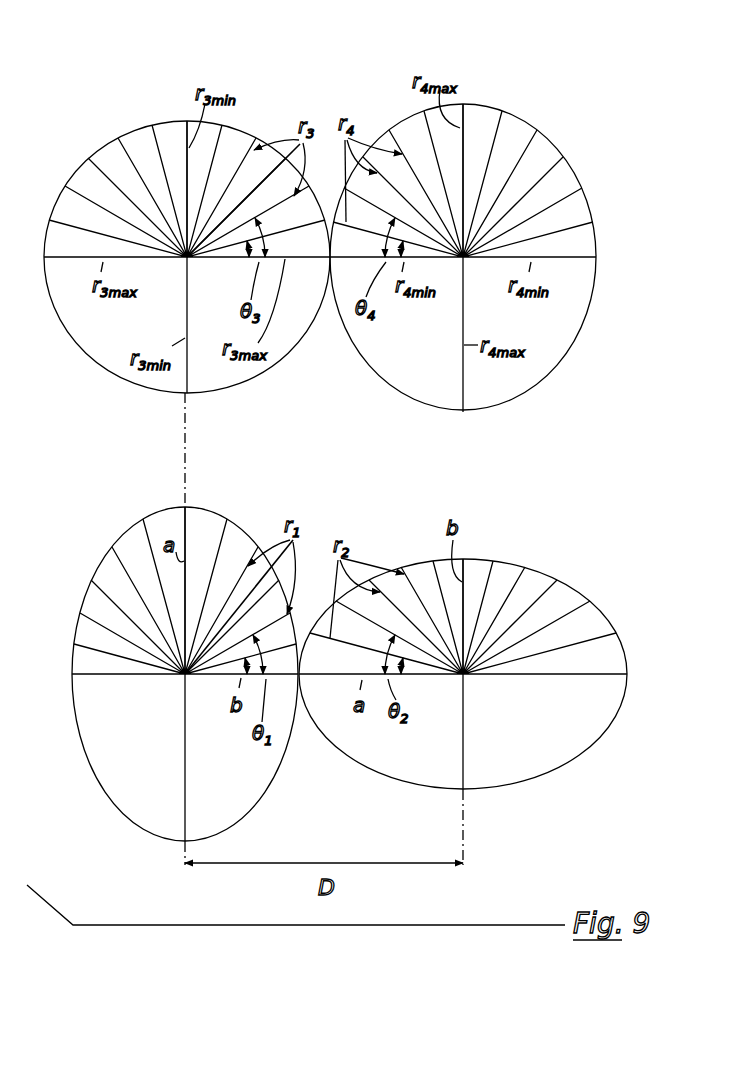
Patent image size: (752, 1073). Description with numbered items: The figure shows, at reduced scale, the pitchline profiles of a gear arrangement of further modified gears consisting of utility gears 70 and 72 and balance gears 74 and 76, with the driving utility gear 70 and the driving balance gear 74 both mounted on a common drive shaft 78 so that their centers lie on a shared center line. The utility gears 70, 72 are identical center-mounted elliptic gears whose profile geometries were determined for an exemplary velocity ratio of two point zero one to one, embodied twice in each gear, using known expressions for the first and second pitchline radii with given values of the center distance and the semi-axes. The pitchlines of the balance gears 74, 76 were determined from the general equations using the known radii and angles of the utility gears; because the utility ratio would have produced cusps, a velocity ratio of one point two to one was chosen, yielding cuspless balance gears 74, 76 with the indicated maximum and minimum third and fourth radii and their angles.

The utility gear 70 is at (118, 532).
The utility gear 72 is at (548, 572).
The balance gear 74 is at (134, 128).
The balance gear 76 is at (556, 140).
The drive shaft 78 is at (184, 438).